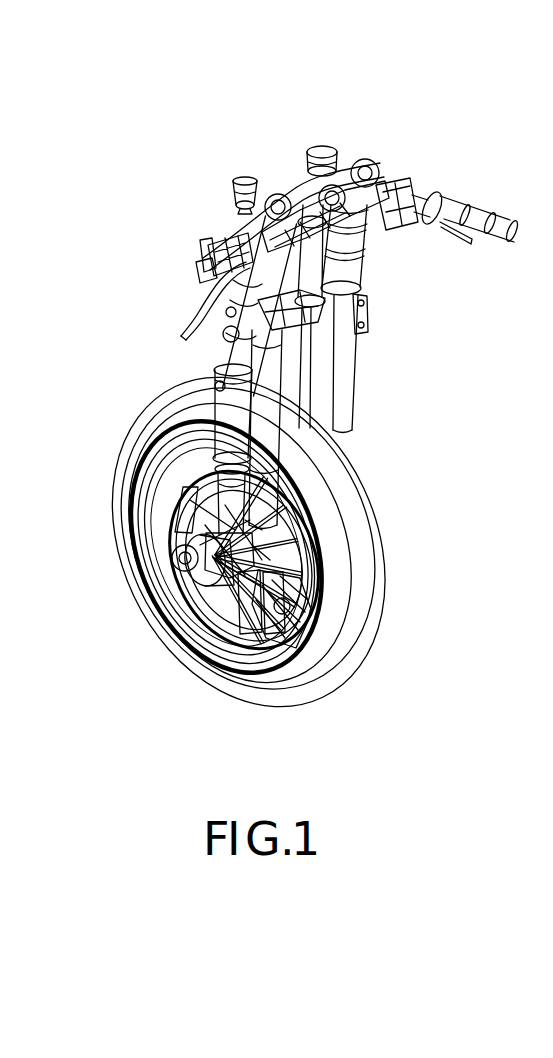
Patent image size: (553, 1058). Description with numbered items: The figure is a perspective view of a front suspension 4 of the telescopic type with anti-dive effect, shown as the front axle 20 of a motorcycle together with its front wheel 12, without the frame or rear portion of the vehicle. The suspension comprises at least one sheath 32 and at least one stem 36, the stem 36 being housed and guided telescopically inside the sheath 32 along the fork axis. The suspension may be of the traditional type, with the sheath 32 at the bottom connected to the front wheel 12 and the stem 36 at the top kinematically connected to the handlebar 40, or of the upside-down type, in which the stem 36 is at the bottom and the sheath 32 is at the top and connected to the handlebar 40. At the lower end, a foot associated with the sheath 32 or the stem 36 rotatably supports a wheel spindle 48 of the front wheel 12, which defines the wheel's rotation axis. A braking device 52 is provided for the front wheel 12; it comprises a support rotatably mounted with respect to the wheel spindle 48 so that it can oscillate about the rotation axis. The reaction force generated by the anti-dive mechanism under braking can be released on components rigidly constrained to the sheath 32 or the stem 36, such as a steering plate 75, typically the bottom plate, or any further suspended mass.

The front suspension 4 is at (387, 415).
The front wheel 12 is at (337, 660).
The front axle 20 is at (121, 203).
The sheath 32 is at (238, 406).
The stem 36 is at (185, 490).
The handlebar 40 is at (403, 182).
The wheel spindle 48 is at (182, 562).
The braking device 52 is at (300, 600).
The steering plate 75 is at (362, 331).